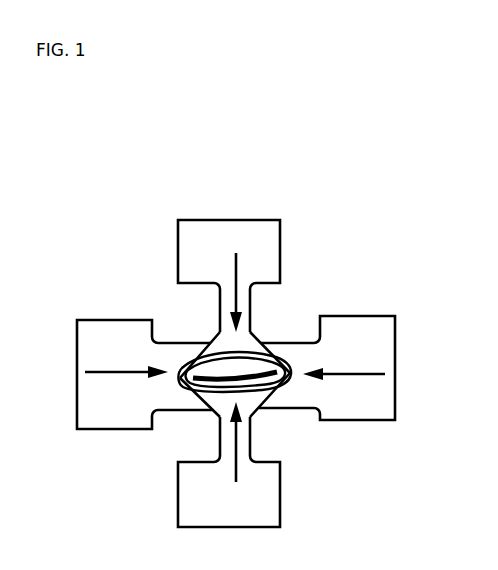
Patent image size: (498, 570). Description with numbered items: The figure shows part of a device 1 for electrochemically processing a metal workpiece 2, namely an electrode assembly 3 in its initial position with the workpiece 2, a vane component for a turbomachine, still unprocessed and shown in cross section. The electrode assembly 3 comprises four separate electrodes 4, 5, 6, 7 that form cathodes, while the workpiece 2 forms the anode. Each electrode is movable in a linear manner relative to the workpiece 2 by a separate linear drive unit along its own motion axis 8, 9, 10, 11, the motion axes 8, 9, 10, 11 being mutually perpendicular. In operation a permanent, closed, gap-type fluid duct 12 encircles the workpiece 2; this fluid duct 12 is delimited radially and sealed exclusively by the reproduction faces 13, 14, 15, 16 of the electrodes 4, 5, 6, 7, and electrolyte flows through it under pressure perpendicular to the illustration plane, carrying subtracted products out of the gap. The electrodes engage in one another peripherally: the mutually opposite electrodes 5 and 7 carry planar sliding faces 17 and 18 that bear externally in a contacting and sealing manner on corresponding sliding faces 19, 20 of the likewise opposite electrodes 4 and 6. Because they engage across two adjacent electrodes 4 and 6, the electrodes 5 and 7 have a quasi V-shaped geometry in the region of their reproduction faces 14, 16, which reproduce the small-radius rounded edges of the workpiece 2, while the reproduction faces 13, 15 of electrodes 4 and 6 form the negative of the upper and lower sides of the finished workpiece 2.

The device 1 is at (340, 174).
The metal workpiece 2 is at (185, 390).
The electrode assembly 3 is at (330, 260).
The electrode 4 is at (178, 245).
The electrode 5 is at (383, 338).
The electrode 6 is at (273, 502).
The electrode 7 is at (93, 413).
The motion axis 8 is at (233, 272).
The motion axis 9 is at (355, 374).
The motion axis 10 is at (232, 470).
The motion axis 11 is at (113, 363).
The fluid duct 12 is at (275, 352).
The reproduction face 13 is at (197, 353).
The reproduction face 14 is at (293, 370).
The reproduction face 15 is at (270, 392).
The reproduction face 16 is at (180, 364).
The sliding face 17 is at (283, 348).
The sliding face 18 is at (185, 350).
The sliding face 19 is at (215, 352).
The sliding face 20 is at (212, 412).